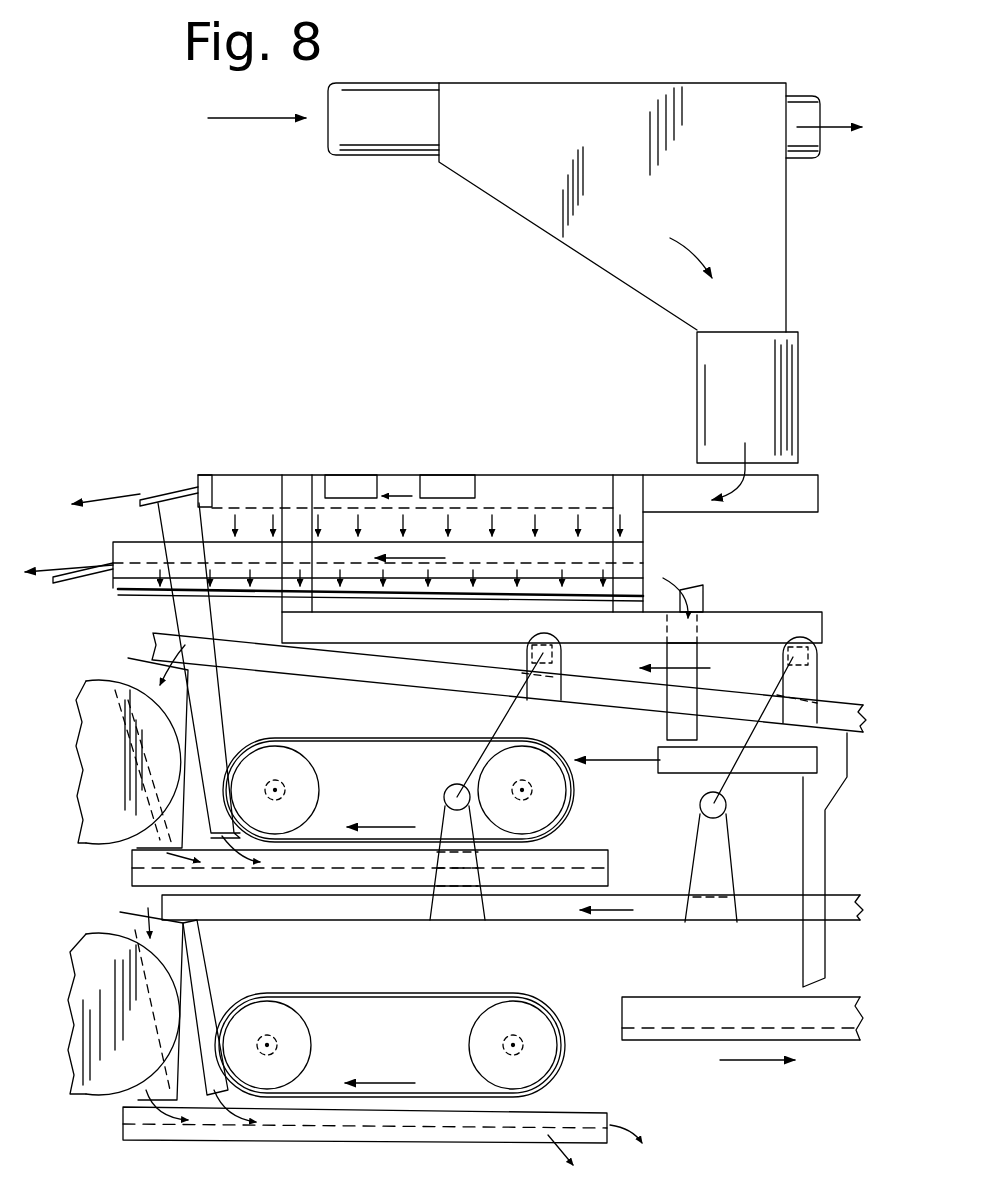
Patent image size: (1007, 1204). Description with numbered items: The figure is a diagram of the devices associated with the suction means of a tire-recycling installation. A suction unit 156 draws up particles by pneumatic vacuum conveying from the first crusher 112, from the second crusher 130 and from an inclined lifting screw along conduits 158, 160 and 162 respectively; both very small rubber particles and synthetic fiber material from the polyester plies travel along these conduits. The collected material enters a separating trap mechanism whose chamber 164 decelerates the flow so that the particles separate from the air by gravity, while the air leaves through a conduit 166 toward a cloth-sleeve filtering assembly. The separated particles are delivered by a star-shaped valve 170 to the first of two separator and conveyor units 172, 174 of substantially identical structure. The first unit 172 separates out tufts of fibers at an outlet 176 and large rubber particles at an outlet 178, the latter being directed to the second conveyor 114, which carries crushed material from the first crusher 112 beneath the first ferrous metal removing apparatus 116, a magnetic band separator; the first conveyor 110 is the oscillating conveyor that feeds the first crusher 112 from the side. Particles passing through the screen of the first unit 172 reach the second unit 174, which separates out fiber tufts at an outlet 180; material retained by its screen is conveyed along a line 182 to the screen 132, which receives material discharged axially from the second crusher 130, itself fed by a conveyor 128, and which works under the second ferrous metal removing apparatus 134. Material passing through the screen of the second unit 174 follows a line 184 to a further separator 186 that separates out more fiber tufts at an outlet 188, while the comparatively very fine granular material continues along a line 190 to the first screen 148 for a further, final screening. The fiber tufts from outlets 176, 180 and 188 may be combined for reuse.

The first conveyor 110 is at (425, 690).
The first crusher 112 is at (110, 830).
The second conveyor 114 is at (343, 915).
The first ferrous metal removing apparatus 116 is at (336, 737).
The conveyor 128 is at (548, 912).
The second crusher 130 is at (103, 1083).
The screen 132 is at (560, 1106).
The second ferrous metal removing apparatus 134 is at (348, 989).
The first screen 148 is at (685, 1012).
The suction unit 156 is at (338, 308).
The conduit 158 is at (372, 145).
The conduit 160 is at (372, 145).
The conduit 162 is at (385, 156).
The chamber 164 is at (660, 282).
The conduit 166 is at (810, 160).
The star-shaped valve 170 is at (713, 414).
The first separator and conveyor unit 172 is at (393, 466).
The second separator and conveyor unit 174 is at (648, 572).
The outlet 176 is at (172, 492).
The outlet 178 is at (207, 527).
The outlet 180 is at (100, 562).
The line 182 is at (110, 650).
The line 184 is at (703, 608).
The further separator 186 is at (770, 765).
The outlet 188 is at (625, 758).
The line 190 is at (805, 868).